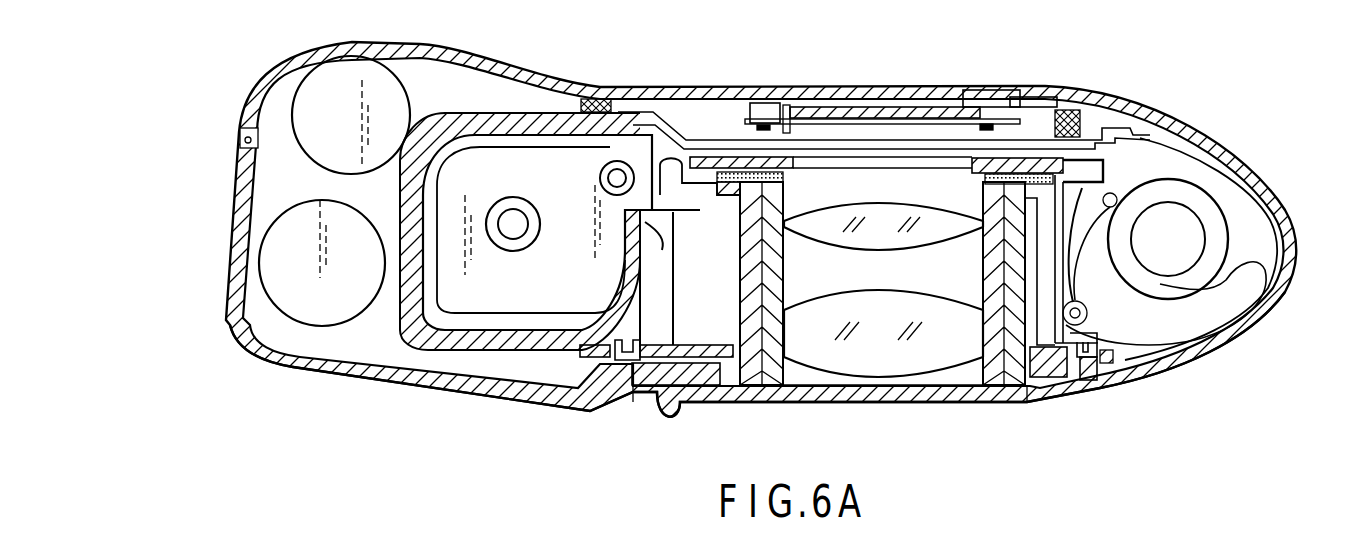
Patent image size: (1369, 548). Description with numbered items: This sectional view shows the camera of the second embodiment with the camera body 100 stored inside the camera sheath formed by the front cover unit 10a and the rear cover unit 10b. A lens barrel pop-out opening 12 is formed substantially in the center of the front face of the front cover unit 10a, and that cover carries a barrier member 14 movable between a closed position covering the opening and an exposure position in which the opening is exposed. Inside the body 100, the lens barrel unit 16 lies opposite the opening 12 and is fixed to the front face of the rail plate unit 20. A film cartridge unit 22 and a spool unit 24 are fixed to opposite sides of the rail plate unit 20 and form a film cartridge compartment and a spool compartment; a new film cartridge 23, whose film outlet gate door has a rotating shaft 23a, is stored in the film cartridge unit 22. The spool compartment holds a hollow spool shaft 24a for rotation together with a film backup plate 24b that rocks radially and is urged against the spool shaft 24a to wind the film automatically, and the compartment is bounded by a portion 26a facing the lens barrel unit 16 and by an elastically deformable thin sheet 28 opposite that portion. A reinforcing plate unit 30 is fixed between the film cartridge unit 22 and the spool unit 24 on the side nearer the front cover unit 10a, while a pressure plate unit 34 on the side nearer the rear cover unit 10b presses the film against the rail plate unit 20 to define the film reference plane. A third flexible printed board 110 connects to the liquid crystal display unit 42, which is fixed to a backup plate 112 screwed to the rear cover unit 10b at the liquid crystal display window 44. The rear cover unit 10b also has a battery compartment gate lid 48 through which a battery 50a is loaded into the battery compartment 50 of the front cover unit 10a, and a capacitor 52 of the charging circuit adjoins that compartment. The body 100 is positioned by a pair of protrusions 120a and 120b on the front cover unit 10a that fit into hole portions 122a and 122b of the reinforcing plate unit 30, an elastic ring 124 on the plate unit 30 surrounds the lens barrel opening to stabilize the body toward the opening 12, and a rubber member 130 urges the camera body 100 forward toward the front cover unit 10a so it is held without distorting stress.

The front cover unit 10a is at (1240, 345).
The rear cover unit 10b is at (1246, 148).
The lens barrel pop-out opening 12 is at (742, 388).
The barrier member 14 is at (882, 394).
The lens barrel unit 16 is at (740, 240).
The rail plate unit 20 is at (720, 157).
The film cartridge unit 22 is at (500, 110).
The new film cartridge 23 is at (526, 289).
The rotating shaft 23a is at (602, 178).
The spool unit 24 is at (1191, 211).
The spool shaft 24a is at (1232, 285).
The film backup plate 24b is at (1133, 280).
The portion 26a is at (1035, 255).
The thin sheet 28 is at (1278, 195).
The reinforcing plate unit 30 is at (700, 345).
The pressure plate unit 34 is at (676, 112).
The liquid crystal display unit 42 is at (962, 92).
The liquid crystal display window 44 is at (814, 94).
The battery compartment gate lid 48 is at (234, 176).
The battery compartment 50 is at (315, 233).
The battery 50a is at (264, 300).
The capacitor 52 is at (398, 103).
The camera body 100 is at (547, 109).
The third flexible printed board 110 is at (880, 108).
The backup plate 112 is at (1032, 100).
The protrusion 120a is at (1095, 380).
The protrusion 120b is at (628, 330).
The hole portion 122a is at (1110, 363).
The hole portion 122b is at (594, 388).
The elastic ring 124 is at (723, 368).
The rubber member 130 is at (598, 100).